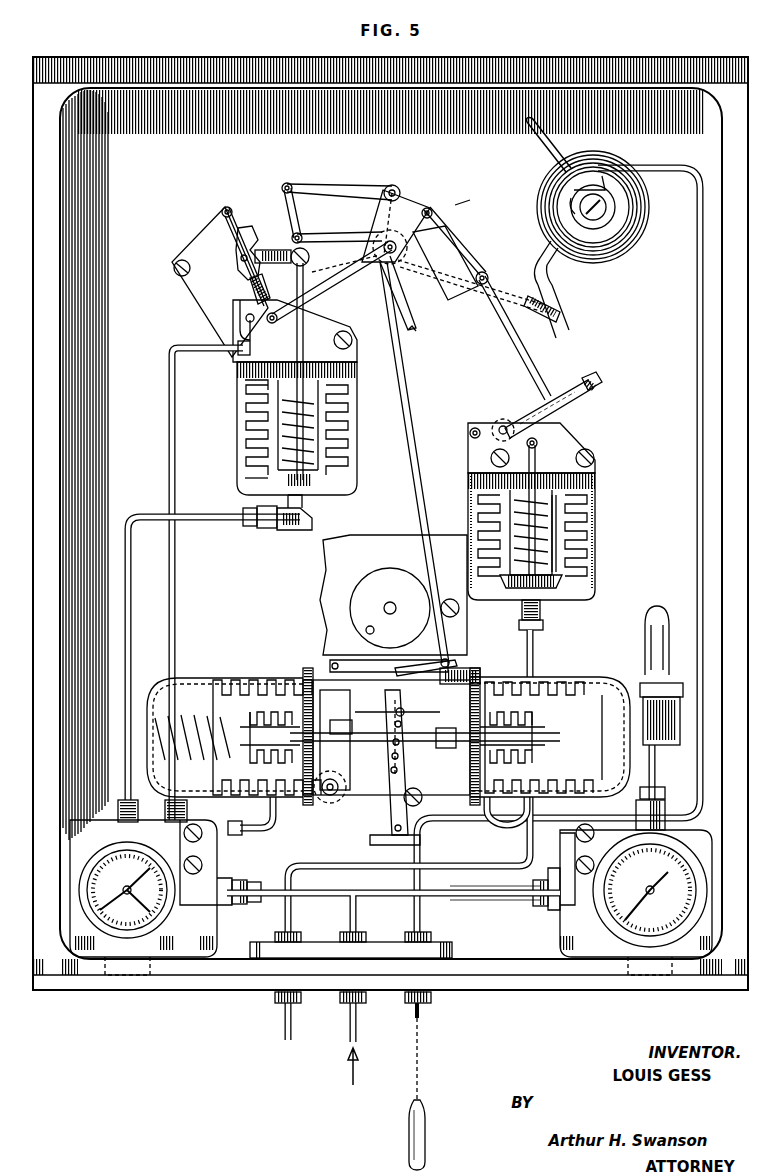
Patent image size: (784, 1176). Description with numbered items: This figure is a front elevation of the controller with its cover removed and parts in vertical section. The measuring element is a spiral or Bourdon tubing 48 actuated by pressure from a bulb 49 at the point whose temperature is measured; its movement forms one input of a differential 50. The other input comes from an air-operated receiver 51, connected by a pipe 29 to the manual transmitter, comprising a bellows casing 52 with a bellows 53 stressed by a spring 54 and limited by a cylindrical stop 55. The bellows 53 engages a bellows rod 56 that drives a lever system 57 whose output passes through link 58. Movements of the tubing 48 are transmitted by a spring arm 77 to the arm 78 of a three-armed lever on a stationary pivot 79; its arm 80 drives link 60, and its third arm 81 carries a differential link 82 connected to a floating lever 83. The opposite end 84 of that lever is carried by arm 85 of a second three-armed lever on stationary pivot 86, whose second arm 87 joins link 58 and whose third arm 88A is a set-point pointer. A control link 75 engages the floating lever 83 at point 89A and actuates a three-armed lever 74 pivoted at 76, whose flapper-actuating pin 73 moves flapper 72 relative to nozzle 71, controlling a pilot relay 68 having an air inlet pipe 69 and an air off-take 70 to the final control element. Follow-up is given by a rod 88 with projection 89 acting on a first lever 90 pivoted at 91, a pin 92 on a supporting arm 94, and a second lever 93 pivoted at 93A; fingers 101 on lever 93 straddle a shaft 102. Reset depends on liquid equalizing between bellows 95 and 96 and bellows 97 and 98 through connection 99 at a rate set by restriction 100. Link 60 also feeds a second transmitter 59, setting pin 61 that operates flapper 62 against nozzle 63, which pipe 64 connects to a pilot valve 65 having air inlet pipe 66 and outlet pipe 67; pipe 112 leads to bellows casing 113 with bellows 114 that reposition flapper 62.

The pipe 29 is at (536, 664).
The spiral or Bourdon tubing 48 is at (541, 200).
The bulb 49 is at (424, 1132).
The differential 50 is at (472, 191).
The air-operated receiver 51 is at (617, 487).
The bellows casing 52 is at (596, 556).
The bellows 53 is at (575, 545).
The spring 54 is at (560, 577).
The cylindrical stop 55 is at (590, 520).
The bellows rod or link 56 is at (538, 460).
The lever system 57 is at (583, 398).
The link 58 is at (540, 380).
The second transmitter 59 is at (222, 436).
The link 60 is at (330, 290).
The pin 61 is at (236, 256).
The flapper 62 is at (240, 240).
The nozzle 63 is at (248, 296).
The pipe 64 is at (170, 460).
The pilot valve 65 is at (183, 928).
The air inlet pipe 66 is at (300, 897).
The air outlet pipe 67 is at (135, 980).
The pilot valve or relay 68 is at (594, 925).
The air inlet pipe 69 is at (478, 899).
The air off-take 70 is at (642, 980).
The nozzle 71 is at (460, 665).
The flapper 72 is at (399, 744).
The flapper-actuating pin 73 is at (407, 720).
The three-armed lever 74 is at (350, 660).
The control link 75 is at (402, 390).
The pivot 76 is at (400, 668).
The spring arm 77 is at (468, 307).
The arm 78 is at (380, 218).
The stationary pivot 79 is at (401, 191).
The arm 80 is at (412, 212).
The third arm 81 is at (346, 185).
The differential link 82 is at (284, 192).
The floating lever 83 is at (332, 233).
The opposite end of lever 84 is at (490, 278).
The arm 85 is at (468, 266).
The stationary pivot 86 is at (383, 243).
The second arm 87 is at (434, 212).
The rod 88 is at (447, 742).
The third arm 88A is at (424, 322).
The projection 89 is at (419, 737).
The point 89A is at (341, 268).
The first lever 90 is at (399, 758).
The pivot 91 is at (390, 712).
The pin 92 is at (398, 772).
The second lever 93 is at (378, 812).
The pivot 93A is at (422, 798).
The supporting arm 94 is at (398, 832).
The bellows 95 is at (527, 702).
The bellows 96 is at (583, 685).
The bellows 97 is at (242, 680).
The bellows 98 is at (284, 680).
The connection 99 is at (336, 712).
The restriction 100 is at (462, 674).
The fingers 101 is at (342, 730).
The shaft 102 is at (328, 797).
The pipe 112 is at (215, 658).
The bellows casing 113 is at (237, 472).
The bellows 114 is at (243, 392).